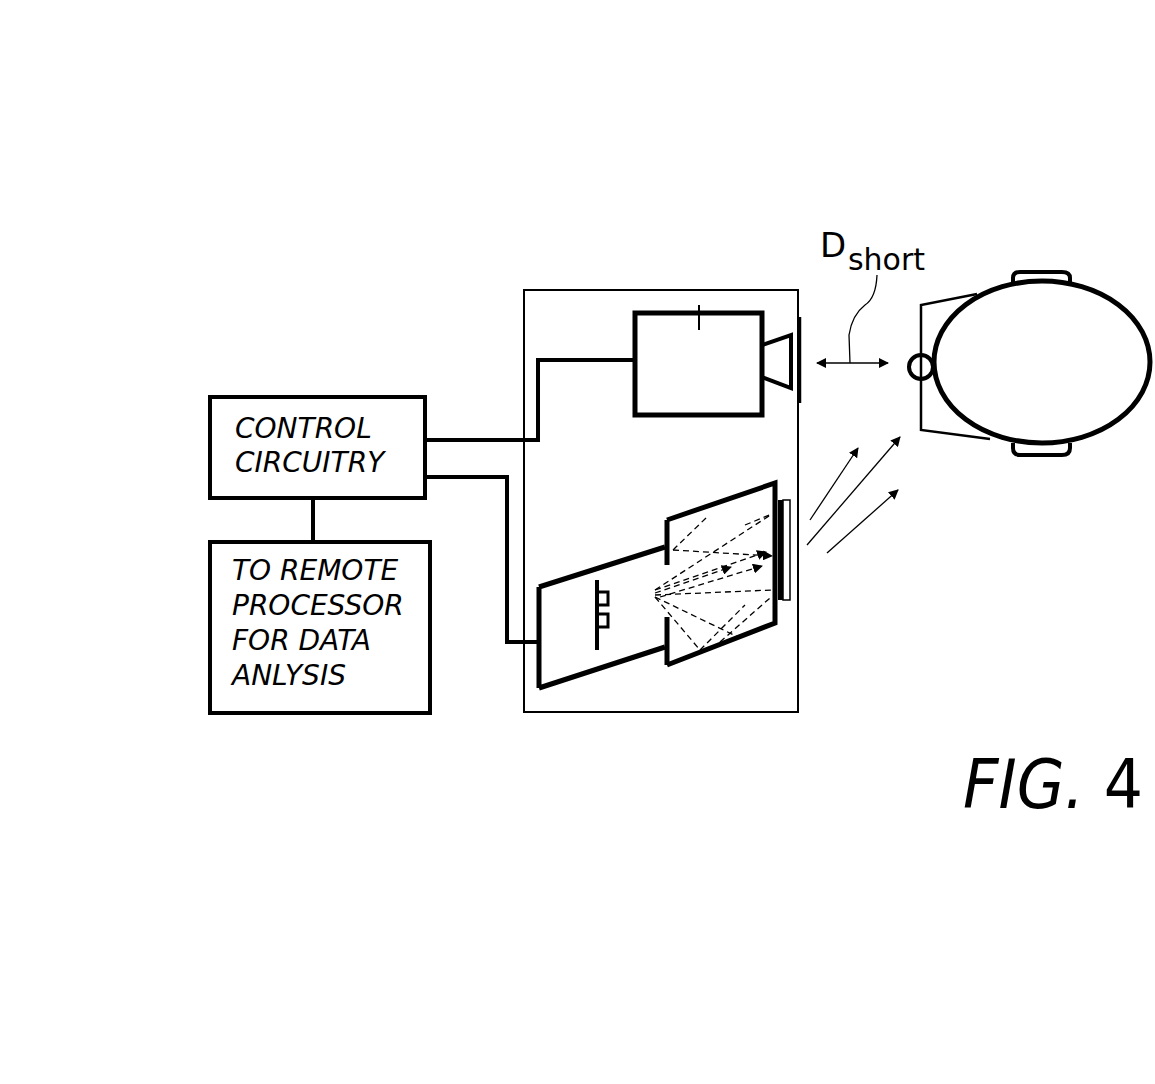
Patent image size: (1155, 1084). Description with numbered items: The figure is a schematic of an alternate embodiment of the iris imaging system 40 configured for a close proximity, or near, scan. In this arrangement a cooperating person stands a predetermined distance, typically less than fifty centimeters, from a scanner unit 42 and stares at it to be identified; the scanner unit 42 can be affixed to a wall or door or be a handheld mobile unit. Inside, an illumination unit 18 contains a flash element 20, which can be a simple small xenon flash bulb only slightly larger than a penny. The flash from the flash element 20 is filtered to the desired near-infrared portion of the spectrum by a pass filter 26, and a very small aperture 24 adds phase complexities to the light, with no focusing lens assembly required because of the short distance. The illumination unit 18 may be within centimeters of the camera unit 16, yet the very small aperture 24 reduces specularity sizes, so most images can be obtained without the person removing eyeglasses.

The camera unit 16 is at (625, 300).
The illumination unit 18 is at (637, 653).
The flash element 20 is at (590, 630).
The aperture 24 is at (782, 558).
The pass filter 26 is at (786, 595).
The iris imaging system 40 is at (714, 254).
The scanner unit 42 is at (765, 712).